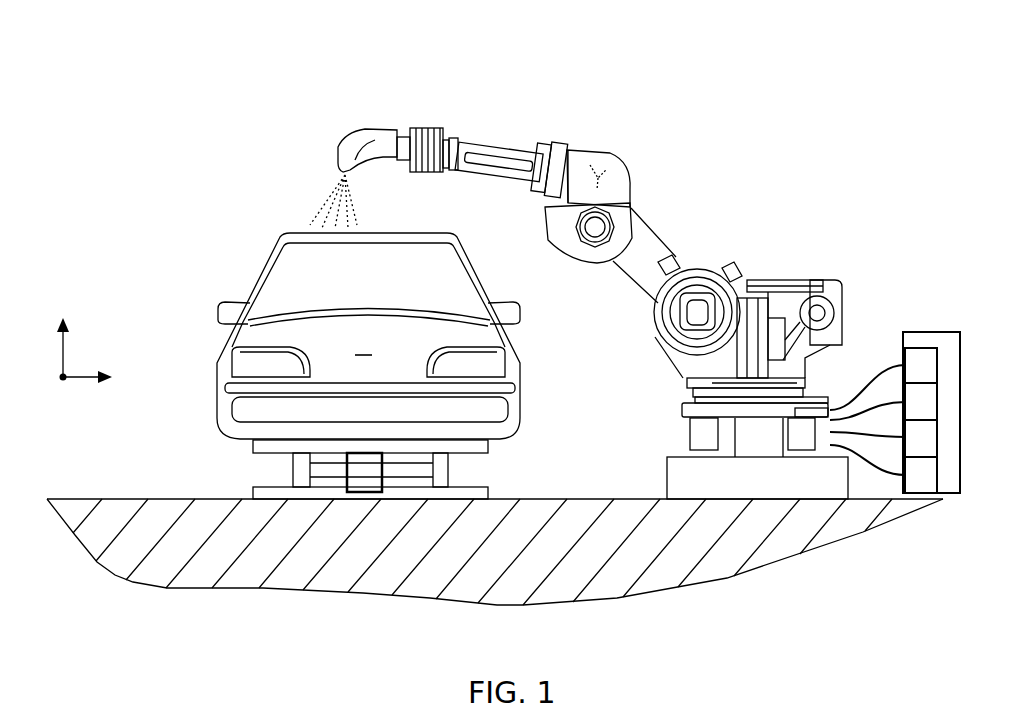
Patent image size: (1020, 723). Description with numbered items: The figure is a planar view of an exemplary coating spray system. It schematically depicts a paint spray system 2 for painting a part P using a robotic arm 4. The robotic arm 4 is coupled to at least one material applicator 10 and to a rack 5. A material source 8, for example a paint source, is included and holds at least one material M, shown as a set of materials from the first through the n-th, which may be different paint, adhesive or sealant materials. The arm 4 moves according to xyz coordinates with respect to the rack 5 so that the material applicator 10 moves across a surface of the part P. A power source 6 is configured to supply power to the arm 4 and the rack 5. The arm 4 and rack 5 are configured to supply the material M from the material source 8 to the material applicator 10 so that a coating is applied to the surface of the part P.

The paint spray system 2 is at (333, 62).
The robotic arm 4 is at (620, 171).
The rack 5 is at (807, 378).
The power source 6 is at (770, 311).
The material source 8 is at (940, 332).
The material applicator 10 is at (345, 150).